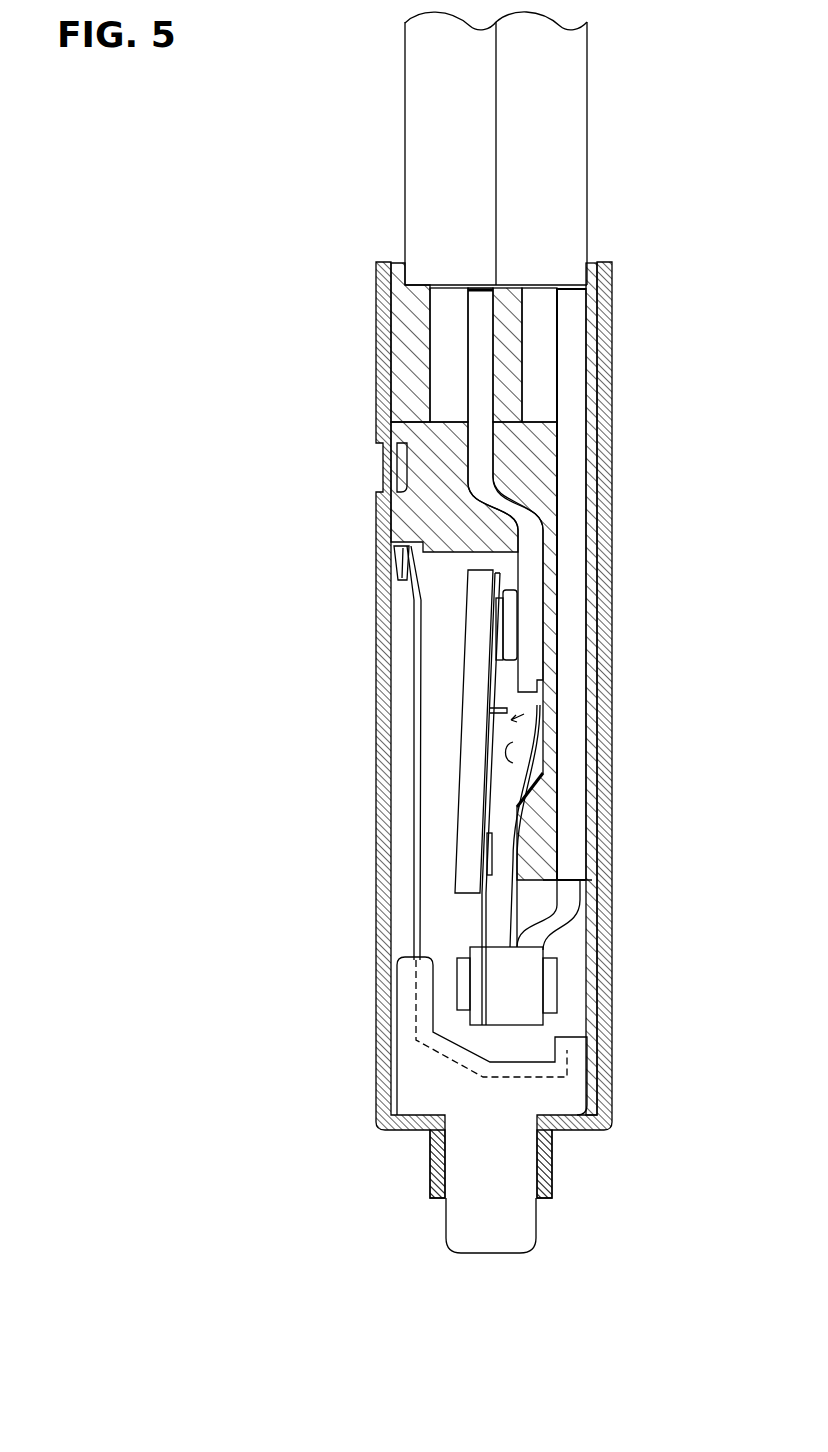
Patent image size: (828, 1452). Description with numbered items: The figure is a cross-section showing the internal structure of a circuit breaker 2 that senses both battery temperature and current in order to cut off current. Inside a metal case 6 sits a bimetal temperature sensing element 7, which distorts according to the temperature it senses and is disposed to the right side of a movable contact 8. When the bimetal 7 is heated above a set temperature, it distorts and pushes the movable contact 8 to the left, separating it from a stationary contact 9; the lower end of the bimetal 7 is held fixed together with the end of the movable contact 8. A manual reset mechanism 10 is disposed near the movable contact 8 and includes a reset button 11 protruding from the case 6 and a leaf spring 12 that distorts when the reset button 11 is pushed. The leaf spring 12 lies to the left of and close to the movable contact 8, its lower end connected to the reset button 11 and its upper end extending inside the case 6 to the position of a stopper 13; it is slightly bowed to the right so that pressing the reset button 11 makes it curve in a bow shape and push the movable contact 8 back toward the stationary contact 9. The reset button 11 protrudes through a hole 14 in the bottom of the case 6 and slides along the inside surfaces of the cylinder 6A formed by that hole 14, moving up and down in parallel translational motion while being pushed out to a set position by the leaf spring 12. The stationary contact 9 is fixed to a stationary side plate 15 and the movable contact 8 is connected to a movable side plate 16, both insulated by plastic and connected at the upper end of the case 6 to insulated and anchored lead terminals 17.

The circuit breaker 2 is at (522, 653).
The metal case 6 is at (386, 818).
The cylinder 6A is at (432, 1146).
The bimetal temperature sensing element 7 is at (514, 753).
The movable contact 8 is at (498, 630).
The stationary contact 9 is at (514, 623).
The manual reset mechanism 10 is at (477, 1246).
The reset button 11 is at (477, 1219).
The leaf spring 12 is at (413, 727).
The stopper 13 is at (402, 578).
The hole 14 is at (550, 1206).
The stationary side plate 15 is at (532, 572).
The movable side plate 16 is at (567, 812).
The lead terminals 17 is at (425, 118).